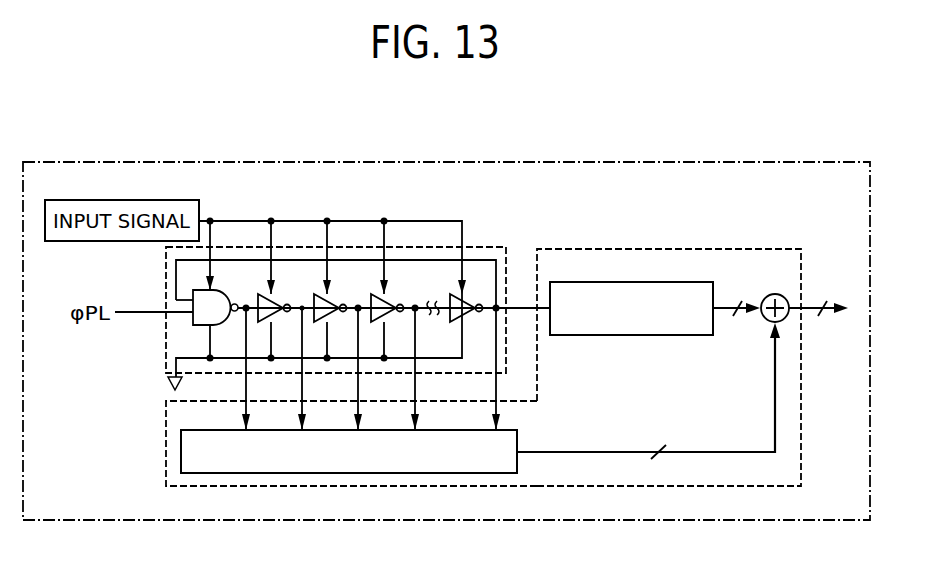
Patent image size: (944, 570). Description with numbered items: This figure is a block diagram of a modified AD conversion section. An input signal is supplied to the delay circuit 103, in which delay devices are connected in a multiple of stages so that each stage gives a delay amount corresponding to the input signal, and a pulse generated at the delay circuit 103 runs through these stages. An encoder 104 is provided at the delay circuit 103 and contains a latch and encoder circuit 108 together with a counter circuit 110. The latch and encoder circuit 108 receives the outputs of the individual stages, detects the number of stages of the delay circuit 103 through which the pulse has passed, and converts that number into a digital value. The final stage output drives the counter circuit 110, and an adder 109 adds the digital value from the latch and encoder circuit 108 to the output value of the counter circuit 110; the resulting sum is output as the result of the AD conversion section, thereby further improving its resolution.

The delay circuit 103 is at (487, 248).
The encoder 104 is at (682, 351).
The latch and encoder circuit 108 is at (518, 433).
The adder 109 is at (765, 321).
The counter circuit 110 is at (631, 336).